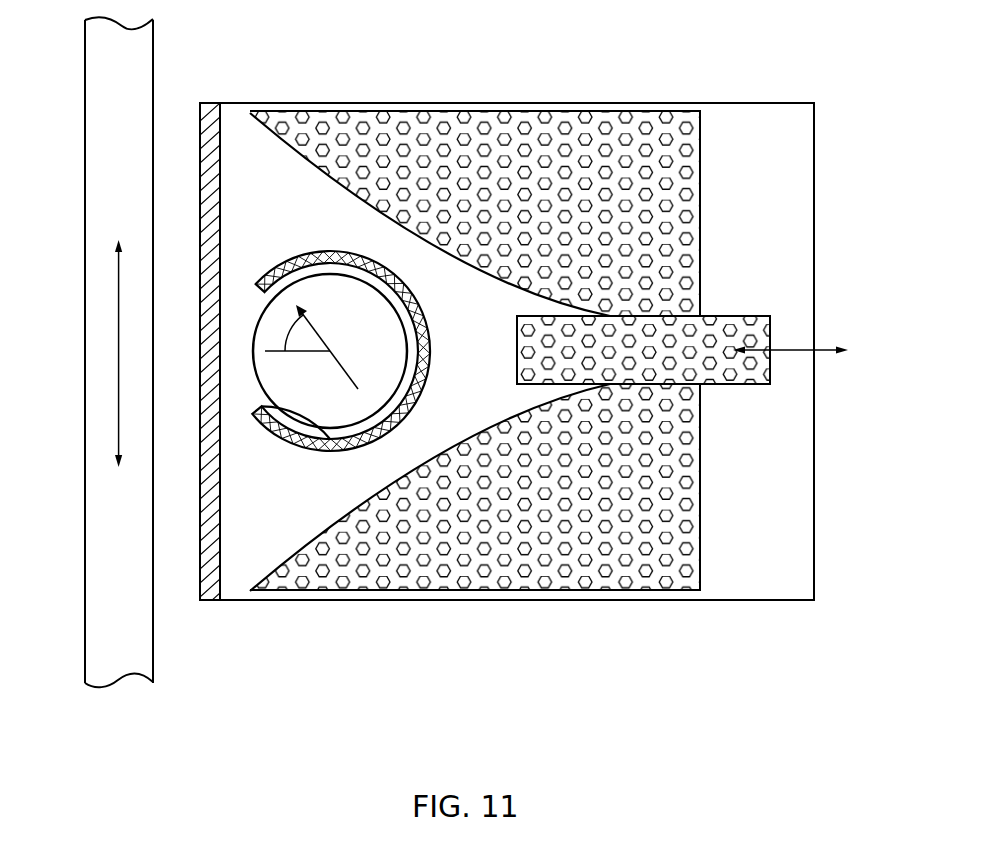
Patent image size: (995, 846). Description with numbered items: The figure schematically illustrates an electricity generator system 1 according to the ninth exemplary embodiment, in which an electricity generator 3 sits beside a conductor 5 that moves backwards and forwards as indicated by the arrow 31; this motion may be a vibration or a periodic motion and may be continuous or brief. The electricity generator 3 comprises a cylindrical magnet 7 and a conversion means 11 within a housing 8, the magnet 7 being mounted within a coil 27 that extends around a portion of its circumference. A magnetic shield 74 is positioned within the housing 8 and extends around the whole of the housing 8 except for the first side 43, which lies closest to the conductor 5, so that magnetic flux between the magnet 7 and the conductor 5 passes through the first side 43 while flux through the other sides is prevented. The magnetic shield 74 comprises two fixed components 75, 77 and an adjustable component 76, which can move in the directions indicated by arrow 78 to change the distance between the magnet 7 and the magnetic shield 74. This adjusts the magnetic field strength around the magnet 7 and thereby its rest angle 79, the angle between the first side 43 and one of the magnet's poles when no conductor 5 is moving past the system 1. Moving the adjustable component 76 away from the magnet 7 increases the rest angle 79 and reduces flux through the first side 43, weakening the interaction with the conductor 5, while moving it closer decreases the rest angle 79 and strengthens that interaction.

The electricity generator system 1 is at (339, 640).
The electricity generator 3 is at (817, 152).
The conductor 5 is at (85, 183).
The magnet 7 is at (262, 313).
The housing 8 is at (505, 322).
The conversion means 11 is at (268, 428).
The coil 27 is at (305, 443).
The arrow 31 is at (118, 372).
The first side 43 is at (210, 103).
The magnetic shield 74 is at (700, 147).
The fixed component 75 is at (697, 220).
The adjustable component 76 is at (730, 385).
The fixed component 77 is at (700, 497).
The arrow 78 is at (823, 348).
The rest angle 79 is at (310, 338).